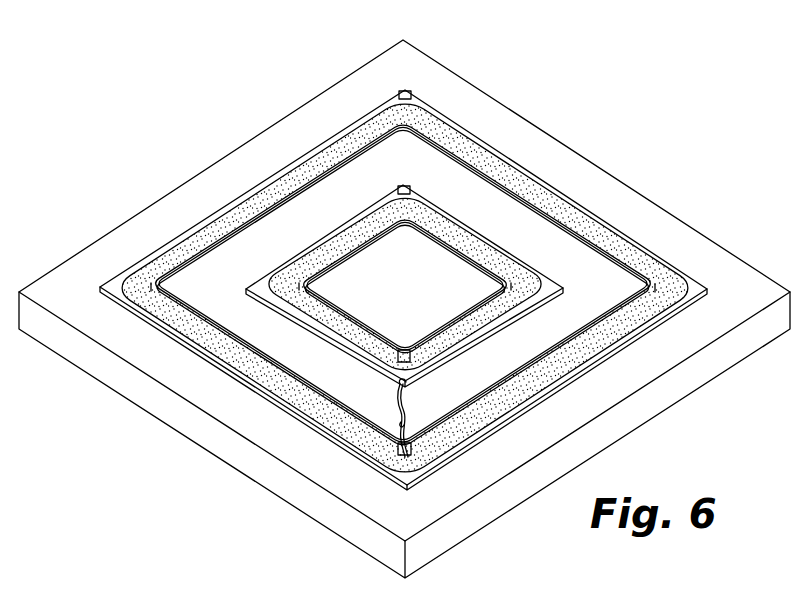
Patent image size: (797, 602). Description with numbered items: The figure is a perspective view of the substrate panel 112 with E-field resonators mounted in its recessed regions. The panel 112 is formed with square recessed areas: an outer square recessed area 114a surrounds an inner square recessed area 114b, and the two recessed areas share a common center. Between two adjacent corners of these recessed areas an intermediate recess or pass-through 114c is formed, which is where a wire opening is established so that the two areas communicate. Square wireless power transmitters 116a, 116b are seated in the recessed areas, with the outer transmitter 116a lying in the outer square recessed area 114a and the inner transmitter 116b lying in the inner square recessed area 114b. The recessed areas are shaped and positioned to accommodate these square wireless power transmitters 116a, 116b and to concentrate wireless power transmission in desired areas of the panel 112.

The substrate panel 112 is at (606, 82).
The outer square recessed area 114a is at (338, 139).
The inner square recessed area 114b is at (455, 218).
The intermediate recess or pass-through 114c is at (450, 383).
The square wireless power transmitter 116a is at (298, 179).
The square wireless power transmitter 116b is at (567, 263).